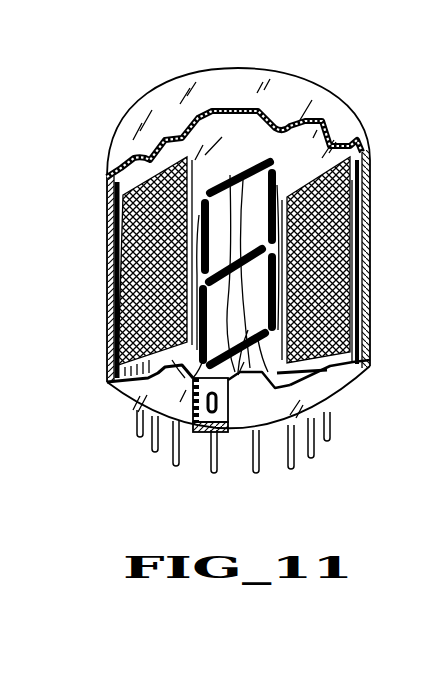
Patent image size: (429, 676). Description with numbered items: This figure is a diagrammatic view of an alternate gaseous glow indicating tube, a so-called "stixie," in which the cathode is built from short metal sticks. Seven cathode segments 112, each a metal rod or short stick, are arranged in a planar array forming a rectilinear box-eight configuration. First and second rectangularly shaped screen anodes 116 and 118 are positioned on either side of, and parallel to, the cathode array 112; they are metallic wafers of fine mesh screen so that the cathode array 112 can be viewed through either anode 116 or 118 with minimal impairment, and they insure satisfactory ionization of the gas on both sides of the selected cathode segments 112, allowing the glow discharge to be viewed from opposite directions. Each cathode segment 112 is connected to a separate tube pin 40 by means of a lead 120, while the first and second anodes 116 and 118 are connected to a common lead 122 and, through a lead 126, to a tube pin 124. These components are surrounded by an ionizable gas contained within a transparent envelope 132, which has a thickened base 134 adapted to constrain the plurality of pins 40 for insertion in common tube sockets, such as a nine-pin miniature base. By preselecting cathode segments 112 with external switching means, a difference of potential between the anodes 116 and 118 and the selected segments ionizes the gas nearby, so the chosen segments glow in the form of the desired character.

The cathode segments 112 is at (243, 160).
The transparent envelope 132 is at (318, 98).
The second screen anode 118 is at (368, 228).
The first screen anode 116 is at (107, 263).
The lead 126 is at (355, 352).
The common lead 122 is at (150, 387).
The lead 120 is at (229, 386).
The tube pin 124 is at (330, 427).
The tube pins 40 is at (174, 460).
The thickened base 134 is at (203, 432).